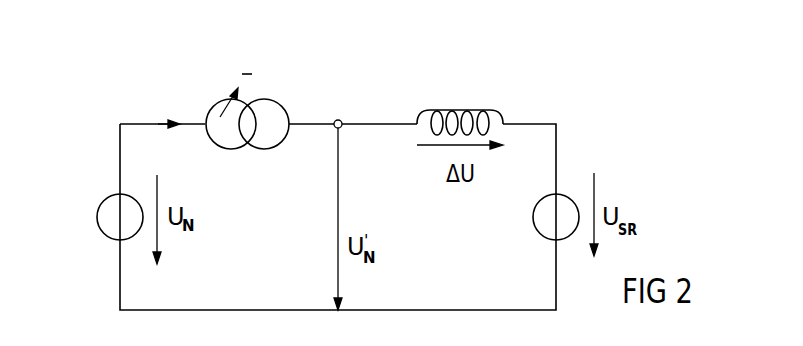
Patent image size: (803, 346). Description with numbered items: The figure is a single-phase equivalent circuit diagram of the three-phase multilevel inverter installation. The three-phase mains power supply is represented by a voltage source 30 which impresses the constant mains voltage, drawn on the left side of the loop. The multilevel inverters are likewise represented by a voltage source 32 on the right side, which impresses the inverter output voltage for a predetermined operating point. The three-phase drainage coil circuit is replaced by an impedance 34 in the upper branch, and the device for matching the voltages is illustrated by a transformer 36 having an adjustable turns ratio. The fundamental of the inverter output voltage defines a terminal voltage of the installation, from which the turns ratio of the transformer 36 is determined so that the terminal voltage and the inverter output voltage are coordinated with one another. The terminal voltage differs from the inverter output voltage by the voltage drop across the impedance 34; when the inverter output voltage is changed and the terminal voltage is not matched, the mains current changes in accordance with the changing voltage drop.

The voltage source 30 is at (105, 198).
The voltage source 32 is at (535, 232).
The impedance 34 is at (443, 110).
The transformer 36 is at (223, 146).